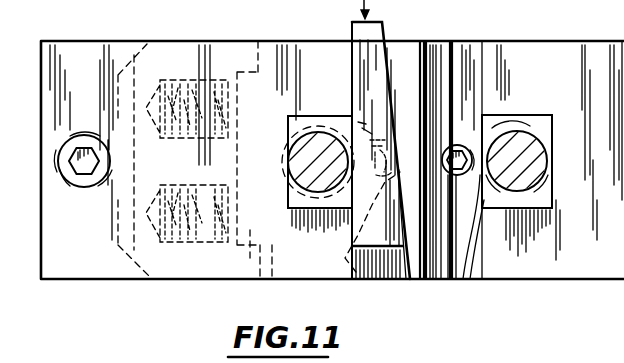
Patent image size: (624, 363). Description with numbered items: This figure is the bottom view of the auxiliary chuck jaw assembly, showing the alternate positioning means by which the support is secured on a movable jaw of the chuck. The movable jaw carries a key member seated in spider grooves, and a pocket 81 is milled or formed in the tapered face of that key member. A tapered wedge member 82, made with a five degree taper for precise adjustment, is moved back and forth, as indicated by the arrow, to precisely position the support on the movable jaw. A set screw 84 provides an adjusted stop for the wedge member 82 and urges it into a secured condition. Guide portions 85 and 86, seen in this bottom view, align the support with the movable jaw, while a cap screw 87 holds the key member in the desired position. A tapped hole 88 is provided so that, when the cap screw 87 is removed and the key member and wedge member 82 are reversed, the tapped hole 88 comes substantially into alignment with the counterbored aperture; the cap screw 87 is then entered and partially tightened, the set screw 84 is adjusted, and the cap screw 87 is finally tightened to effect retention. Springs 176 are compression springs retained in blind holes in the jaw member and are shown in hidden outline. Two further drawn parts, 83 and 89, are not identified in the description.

The springs 176 is at (178, 245).
The tapered wedge member 82 is at (355, 33).
The tapped hole 88 is at (350, 110).
The guide portion 85 is at (290, 205).
The guide portion 86 is at (552, 115).
The cap screw 87 is at (468, 146).
The set screw 84 is at (391, 281).
The lever 83 is at (356, 272).
The pocket 81 is at (412, 270).
The cable 89 is at (463, 280).